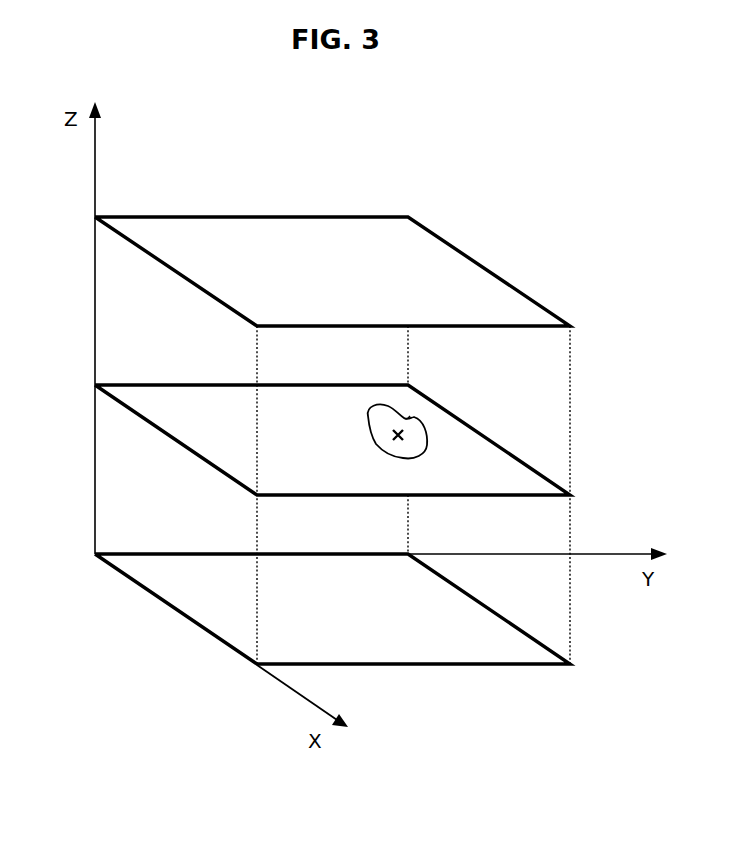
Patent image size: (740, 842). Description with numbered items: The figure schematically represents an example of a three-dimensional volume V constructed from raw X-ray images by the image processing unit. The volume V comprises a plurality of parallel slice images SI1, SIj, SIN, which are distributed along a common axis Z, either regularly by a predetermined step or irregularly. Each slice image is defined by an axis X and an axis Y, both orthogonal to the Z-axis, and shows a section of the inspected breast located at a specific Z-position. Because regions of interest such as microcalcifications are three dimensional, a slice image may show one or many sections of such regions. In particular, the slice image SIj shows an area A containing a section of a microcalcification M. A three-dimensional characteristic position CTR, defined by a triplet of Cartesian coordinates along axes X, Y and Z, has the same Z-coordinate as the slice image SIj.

The slice image SI1 is at (465, 286).
The slice image SIj is at (205, 408).
The slice image SIN is at (428, 640).
The microcalcification M is at (385, 420).
The area A is at (407, 413).
The 3D position CTR is at (417, 432).
The 3D volume V is at (135, 628).